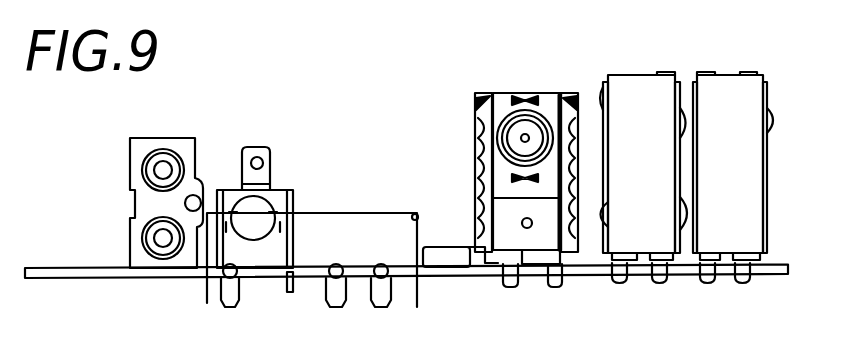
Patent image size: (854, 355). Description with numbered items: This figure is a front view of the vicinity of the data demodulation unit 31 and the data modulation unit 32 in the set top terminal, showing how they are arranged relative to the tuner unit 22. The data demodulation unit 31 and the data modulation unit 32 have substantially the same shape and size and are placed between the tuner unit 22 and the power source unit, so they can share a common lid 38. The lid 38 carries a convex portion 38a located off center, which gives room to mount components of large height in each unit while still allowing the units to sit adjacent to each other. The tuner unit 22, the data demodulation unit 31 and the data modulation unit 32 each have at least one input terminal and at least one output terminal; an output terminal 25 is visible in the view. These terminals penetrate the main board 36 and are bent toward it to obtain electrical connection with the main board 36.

The tuner unit 22 is at (502, 95).
The output terminal 25 is at (255, 238).
The data demodulation unit 31 is at (728, 90).
The data modulation unit 32 is at (640, 87).
The main board 36 is at (453, 272).
The lid 38 is at (603, 100).
The convex portion 38a is at (602, 227).